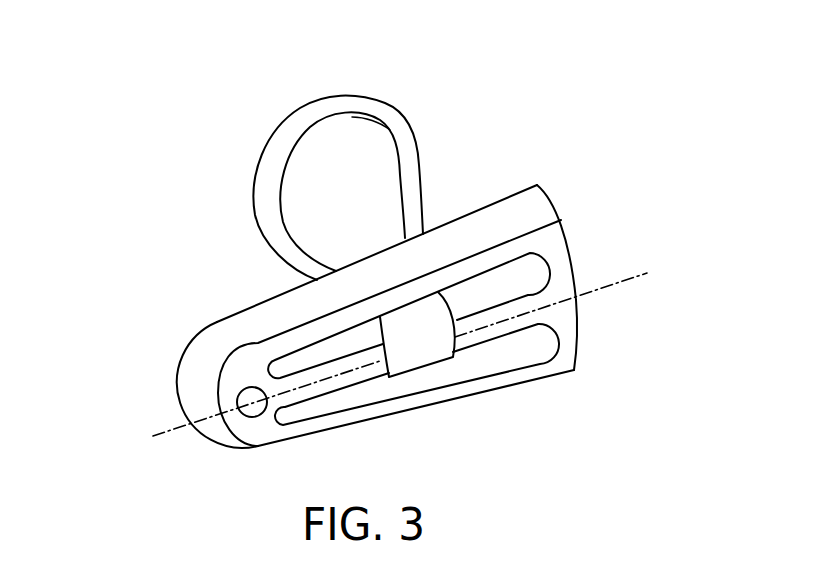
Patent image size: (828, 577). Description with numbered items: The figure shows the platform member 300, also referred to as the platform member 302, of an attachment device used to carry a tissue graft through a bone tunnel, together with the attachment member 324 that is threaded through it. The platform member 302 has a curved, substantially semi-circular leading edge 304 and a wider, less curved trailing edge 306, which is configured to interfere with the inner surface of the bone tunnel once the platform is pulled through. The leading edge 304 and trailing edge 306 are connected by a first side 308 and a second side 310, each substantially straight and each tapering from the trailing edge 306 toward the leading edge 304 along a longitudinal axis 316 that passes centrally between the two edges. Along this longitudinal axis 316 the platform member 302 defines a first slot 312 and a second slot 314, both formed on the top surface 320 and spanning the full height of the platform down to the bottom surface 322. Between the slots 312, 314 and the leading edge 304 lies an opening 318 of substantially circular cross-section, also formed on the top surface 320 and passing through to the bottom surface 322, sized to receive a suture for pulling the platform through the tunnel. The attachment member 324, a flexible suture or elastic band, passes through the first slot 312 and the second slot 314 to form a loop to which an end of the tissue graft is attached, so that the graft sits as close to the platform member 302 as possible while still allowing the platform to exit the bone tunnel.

The platform member 300 is at (143, 198).
The platform member 302 is at (561, 245).
The leading edge 304 is at (192, 403).
The trailing edge 306 is at (577, 307).
The first side 308 is at (515, 205).
The second side 310 is at (465, 397).
The first slot 312 is at (527, 263).
The second slot 314 is at (538, 362).
The longitudinal axis 316 is at (170, 432).
The opening 318 is at (253, 418).
The top surface 320 is at (567, 343).
The bottom surface 322 is at (448, 221).
The attachment member 324 is at (350, 95).